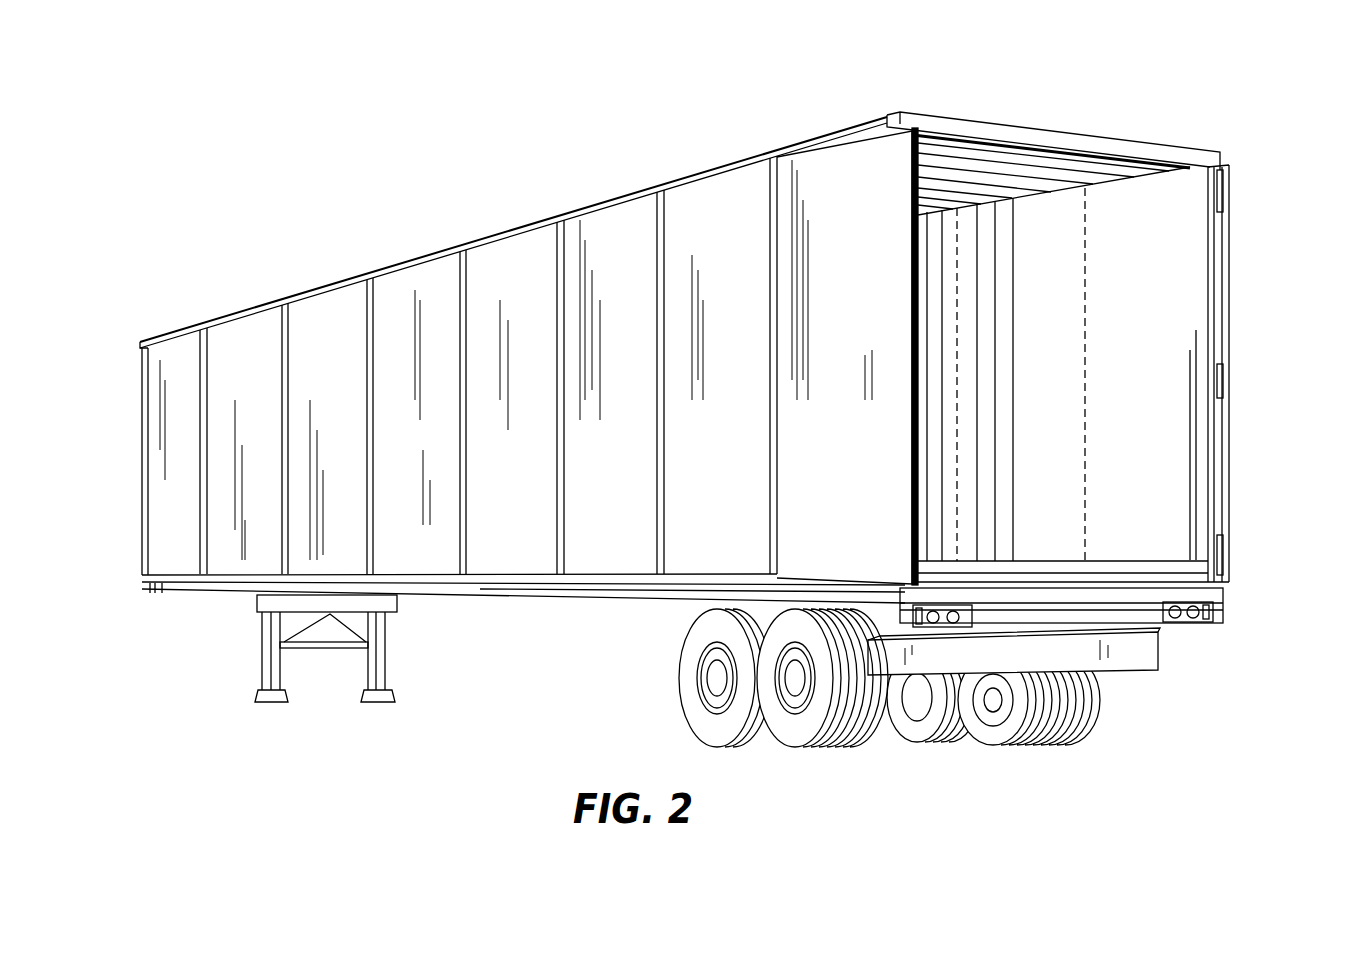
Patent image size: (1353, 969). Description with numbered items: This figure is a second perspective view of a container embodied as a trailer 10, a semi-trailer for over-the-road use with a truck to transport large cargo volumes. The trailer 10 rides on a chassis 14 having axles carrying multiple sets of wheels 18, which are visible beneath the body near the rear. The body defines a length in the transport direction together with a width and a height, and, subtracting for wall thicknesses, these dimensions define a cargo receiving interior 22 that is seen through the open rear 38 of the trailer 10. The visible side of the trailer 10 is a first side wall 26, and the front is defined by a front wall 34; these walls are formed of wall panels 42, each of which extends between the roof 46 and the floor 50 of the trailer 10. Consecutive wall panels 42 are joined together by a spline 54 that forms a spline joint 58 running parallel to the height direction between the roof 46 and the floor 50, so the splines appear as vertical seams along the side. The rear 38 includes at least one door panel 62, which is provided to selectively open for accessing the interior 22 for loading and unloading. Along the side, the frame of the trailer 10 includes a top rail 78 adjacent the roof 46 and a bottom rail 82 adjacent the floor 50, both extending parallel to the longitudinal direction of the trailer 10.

The trailer 10 is at (236, 164).
The chassis 14 is at (217, 590).
The wheels 18 is at (870, 728).
The cargo receiving interior 22 is at (1024, 271).
The first side wall 26 is at (512, 545).
The front wall 34 is at (122, 479).
The rear 38 is at (1256, 225).
The wall panels 42 is at (316, 389).
The roof 46 is at (497, 234).
The floor 50 is at (572, 600).
The spline 54 is at (370, 467).
The spline joint 58 is at (380, 450).
The door panel 62 is at (836, 252).
The top rail 78 is at (707, 173).
The bottom rail 82 is at (683, 575).